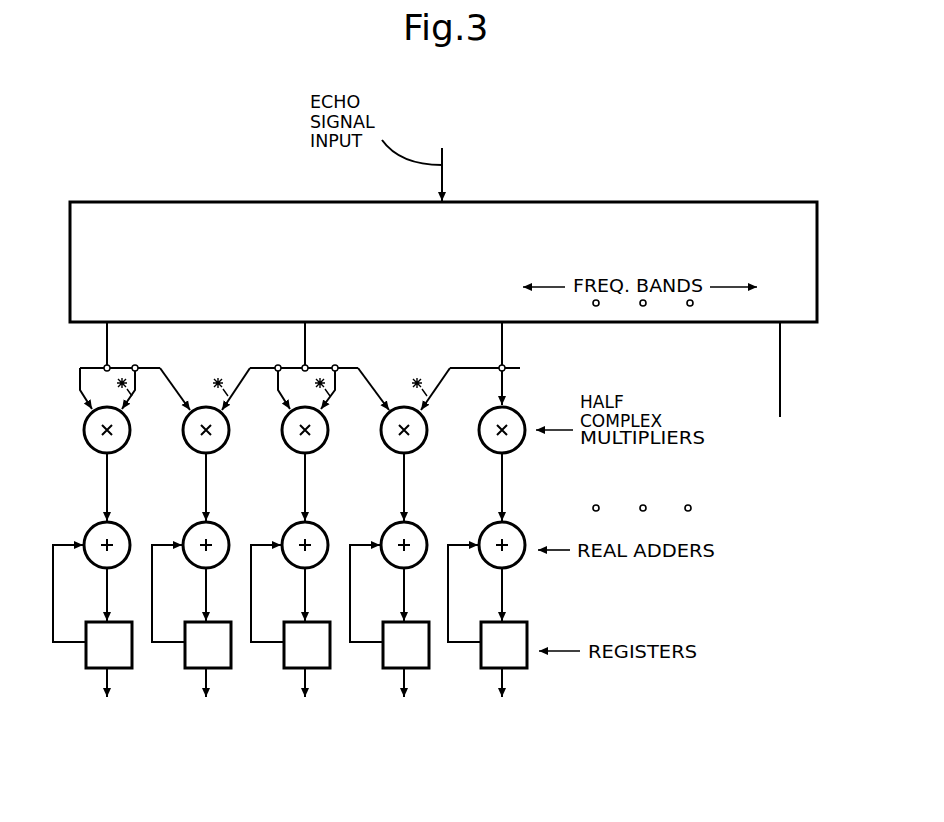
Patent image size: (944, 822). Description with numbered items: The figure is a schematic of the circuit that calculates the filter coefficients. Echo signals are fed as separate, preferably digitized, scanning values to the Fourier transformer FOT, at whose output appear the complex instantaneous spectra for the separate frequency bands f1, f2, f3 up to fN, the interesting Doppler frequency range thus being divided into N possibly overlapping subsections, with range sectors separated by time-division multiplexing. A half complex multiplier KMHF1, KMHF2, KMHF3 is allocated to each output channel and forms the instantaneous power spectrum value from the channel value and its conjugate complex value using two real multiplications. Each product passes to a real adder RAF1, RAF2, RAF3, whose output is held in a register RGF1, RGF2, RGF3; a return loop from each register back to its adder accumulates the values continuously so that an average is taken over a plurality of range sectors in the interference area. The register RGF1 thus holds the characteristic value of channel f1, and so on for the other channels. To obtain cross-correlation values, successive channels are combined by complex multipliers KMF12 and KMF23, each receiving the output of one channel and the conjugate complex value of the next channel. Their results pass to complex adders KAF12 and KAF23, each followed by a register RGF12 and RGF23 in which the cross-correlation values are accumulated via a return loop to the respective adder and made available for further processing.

The Fourier transformer FOT is at (625, 214).
The frequency band channel f1 is at (106, 325).
The frequency band channel f2 is at (305, 325).
The frequency band channel f3 is at (502, 343).
The frequency band channel fN is at (781, 349).
The half complex multiplier KMHF1 is at (121, 438).
The complex multiplier KMF12 is at (220, 438).
The half complex multiplier KMHF2 is at (319, 438).
The complex multiplier KMF23 is at (418, 438).
The half complex multiplier KMHF3 is at (516, 438).
The real adder RAF1 is at (93, 535).
The complex adder KAF12 is at (188, 533).
The real adder RAF2 is at (291, 535).
The complex adder KAF23 is at (386, 535).
The real adder RAF3 is at (488, 535).
The register RGF1 is at (92, 670).
The register RGF12 is at (191, 670).
The register RGF2 is at (290, 670).
The register RGF23 is at (389, 670).
The register RGF3 is at (487, 670).